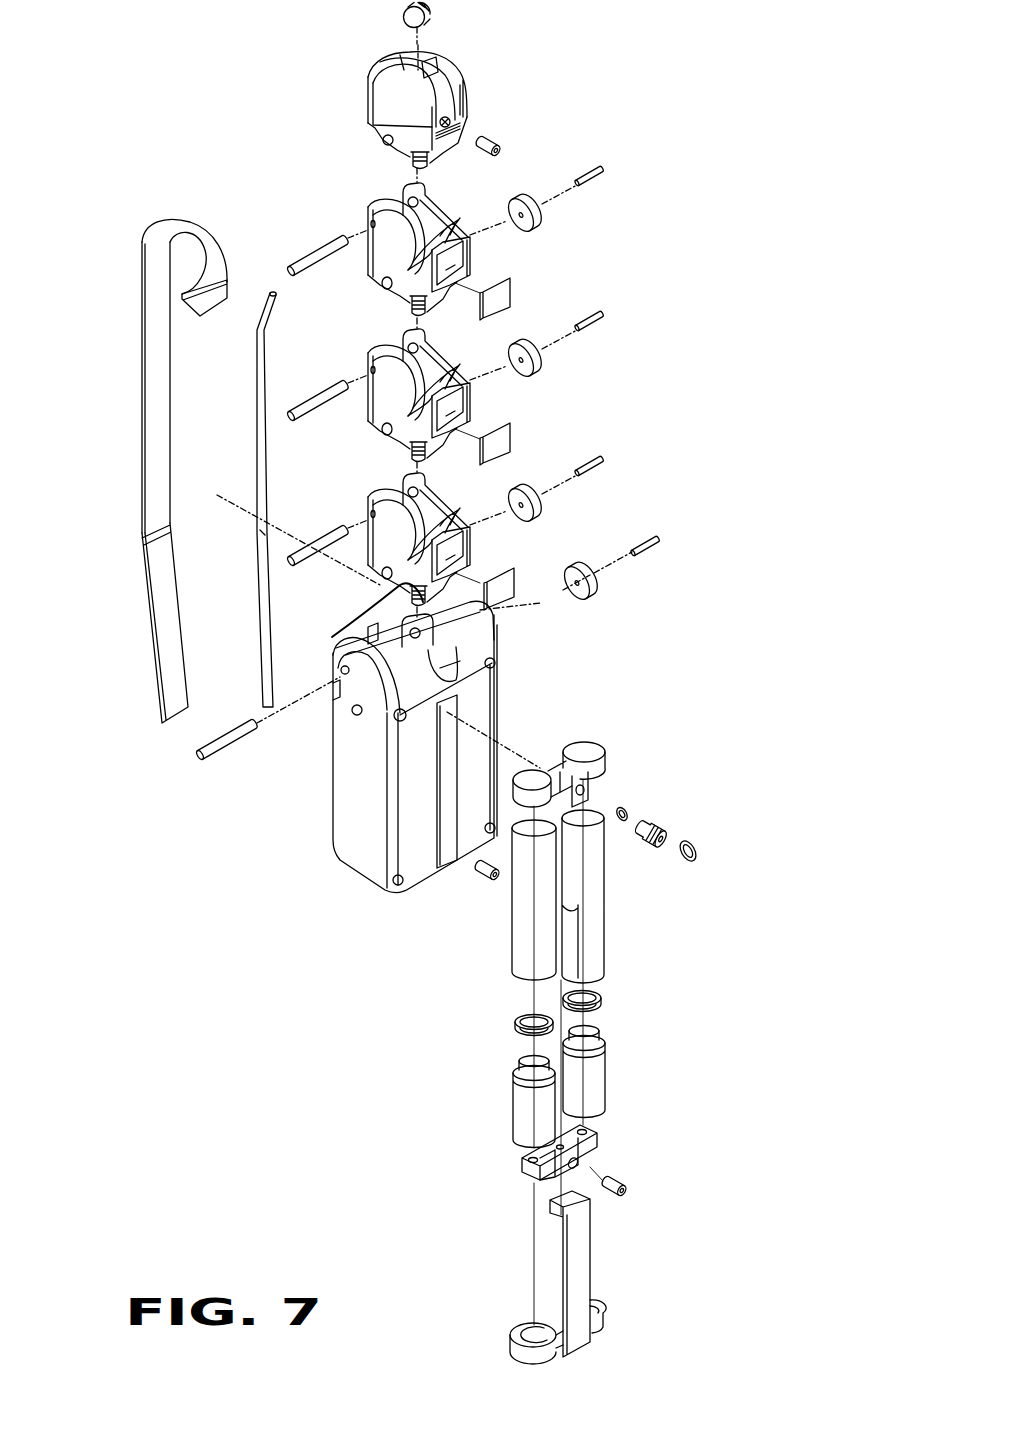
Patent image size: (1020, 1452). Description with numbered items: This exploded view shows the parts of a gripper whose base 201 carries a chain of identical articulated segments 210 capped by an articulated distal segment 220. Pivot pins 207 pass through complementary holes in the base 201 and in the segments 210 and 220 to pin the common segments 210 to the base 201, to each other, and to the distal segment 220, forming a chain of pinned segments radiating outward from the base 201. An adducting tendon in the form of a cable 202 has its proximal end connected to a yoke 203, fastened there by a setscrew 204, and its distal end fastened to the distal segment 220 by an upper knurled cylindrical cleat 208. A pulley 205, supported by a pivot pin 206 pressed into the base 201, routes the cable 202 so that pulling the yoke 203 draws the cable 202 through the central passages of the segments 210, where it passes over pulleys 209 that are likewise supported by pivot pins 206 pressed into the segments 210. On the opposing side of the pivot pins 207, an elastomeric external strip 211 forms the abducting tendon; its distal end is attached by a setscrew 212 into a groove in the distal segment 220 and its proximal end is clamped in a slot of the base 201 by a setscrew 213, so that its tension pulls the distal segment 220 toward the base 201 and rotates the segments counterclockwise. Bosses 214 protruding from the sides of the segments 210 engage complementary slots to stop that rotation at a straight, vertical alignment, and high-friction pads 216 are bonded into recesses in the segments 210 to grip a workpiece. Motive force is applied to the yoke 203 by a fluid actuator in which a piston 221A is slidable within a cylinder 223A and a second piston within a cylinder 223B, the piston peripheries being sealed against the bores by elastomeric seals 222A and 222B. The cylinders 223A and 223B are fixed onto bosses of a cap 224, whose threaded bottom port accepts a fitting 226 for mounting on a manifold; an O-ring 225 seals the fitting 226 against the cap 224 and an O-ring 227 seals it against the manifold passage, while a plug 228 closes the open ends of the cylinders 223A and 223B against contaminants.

The base 201 is at (367, 866).
The adducting tendon (cable) 202 is at (256, 465).
The yoke 203 is at (528, 1172).
The setscrew 204 is at (621, 1182).
The pulley 205 is at (584, 600).
The pivot pin 206 is at (603, 175).
The pivot pin 207 is at (303, 283).
The knurled cylindrical cleat 208 is at (400, 16).
The pulley 209 is at (540, 224).
The articulated segment 210 is at (370, 205).
The abducting tendon (external strip) 211 is at (180, 222).
The setscrew 212 is at (490, 138).
The setscrew 213 is at (487, 882).
The boss 214 is at (334, 637).
The pad 216 is at (505, 296).
The distal segment 220 is at (380, 100).
The piston 221A is at (605, 1062).
The elastomeric seal 222A is at (515, 1022).
The elastomeric seal 222B is at (603, 1000).
The cylinder 223A is at (515, 963).
The cylinder 223B is at (605, 928).
The cap 224 is at (590, 742).
The O-ring 225 is at (628, 808).
The fitting 226 is at (666, 826).
The O-ring 227 is at (696, 863).
The plug 228 is at (580, 1330).